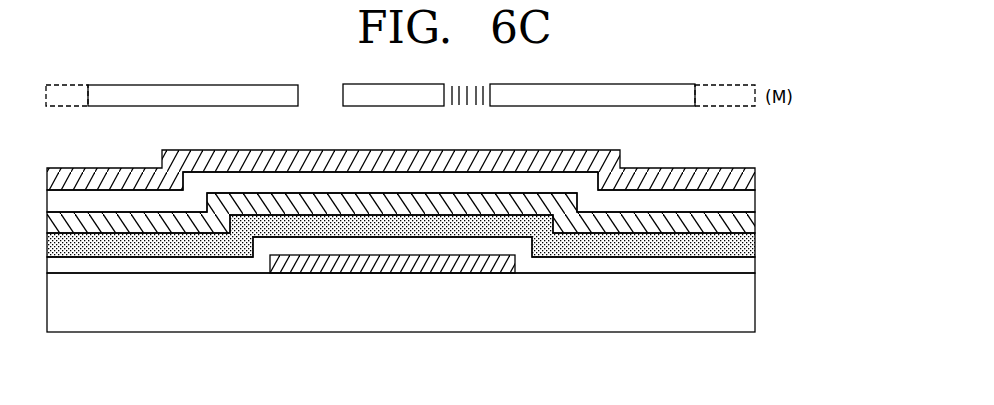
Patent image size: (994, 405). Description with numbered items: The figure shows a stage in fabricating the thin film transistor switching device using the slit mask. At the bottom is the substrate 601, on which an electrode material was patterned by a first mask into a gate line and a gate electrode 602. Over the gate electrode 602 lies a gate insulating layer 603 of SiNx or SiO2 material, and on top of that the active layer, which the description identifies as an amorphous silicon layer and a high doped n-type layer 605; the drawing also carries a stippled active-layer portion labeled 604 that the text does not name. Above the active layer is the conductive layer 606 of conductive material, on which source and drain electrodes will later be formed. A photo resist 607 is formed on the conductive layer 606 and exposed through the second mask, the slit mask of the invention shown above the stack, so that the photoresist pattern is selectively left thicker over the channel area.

The substrate 601 is at (746, 312).
The gate electrode 602 is at (333, 273).
The gate insulating layer 603 is at (746, 268).
The active layer 604 is at (746, 243).
The amorphous silicon layer 605 is at (746, 221).
The conductive layer 606 is at (746, 198).
The photo resist 607 is at (748, 176).